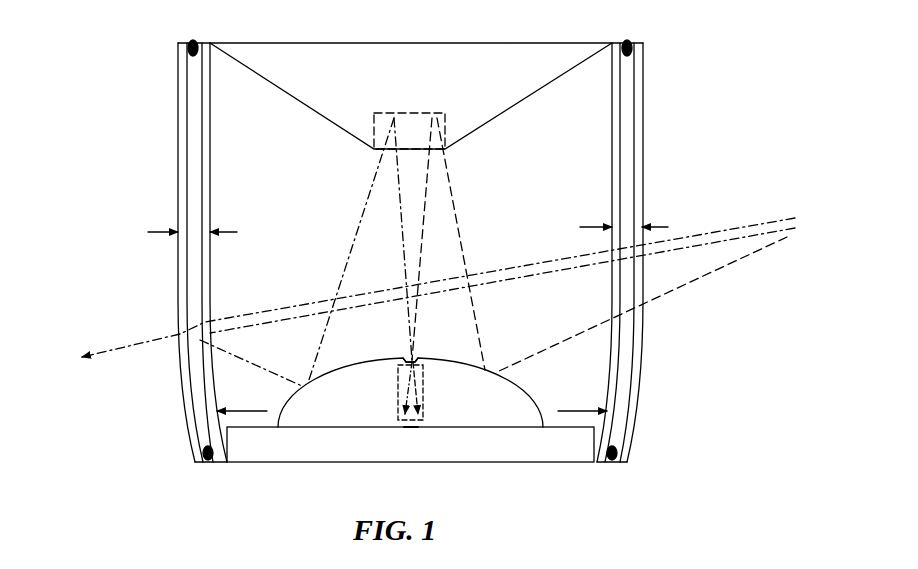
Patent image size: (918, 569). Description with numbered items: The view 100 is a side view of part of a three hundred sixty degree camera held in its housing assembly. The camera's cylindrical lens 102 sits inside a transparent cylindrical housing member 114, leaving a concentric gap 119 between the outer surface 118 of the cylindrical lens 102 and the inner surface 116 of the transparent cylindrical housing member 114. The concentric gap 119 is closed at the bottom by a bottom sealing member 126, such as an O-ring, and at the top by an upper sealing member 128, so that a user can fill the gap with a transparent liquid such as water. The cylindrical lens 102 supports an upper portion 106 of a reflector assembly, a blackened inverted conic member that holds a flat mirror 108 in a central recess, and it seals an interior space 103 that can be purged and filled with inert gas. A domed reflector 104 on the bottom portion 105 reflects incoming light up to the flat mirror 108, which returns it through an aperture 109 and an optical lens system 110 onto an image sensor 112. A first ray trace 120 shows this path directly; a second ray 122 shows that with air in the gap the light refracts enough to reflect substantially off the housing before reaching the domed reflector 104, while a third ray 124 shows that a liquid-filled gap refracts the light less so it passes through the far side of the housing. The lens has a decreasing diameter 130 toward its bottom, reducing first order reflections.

The view 100 is at (330, 29).
The cylindrical lens 102 is at (210, 165).
The interior space 103 is at (306, 192).
The domed reflector 104 is at (522, 393).
The bottom portion 105 is at (278, 447).
The upper portion 106 is at (487, 125).
The flat mirror 108 is at (405, 112).
The aperture 109 is at (418, 360).
The optical lens system 110 is at (398, 411).
The image sensor 112 is at (410, 428).
The transparent cylindrical housing member 114 is at (178, 90).
The inner surface 116 is at (187, 140).
The outer surface 118 is at (202, 206).
The concentric gap 119 is at (165, 232).
The first ray trace 120 is at (702, 277).
The second ray 122 is at (563, 268).
The third ray 124 is at (128, 343).
The bottom sealing member 126 is at (208, 465).
The upper sealing member 128 is at (193, 40).
The decreasing diameter 130 is at (238, 409).